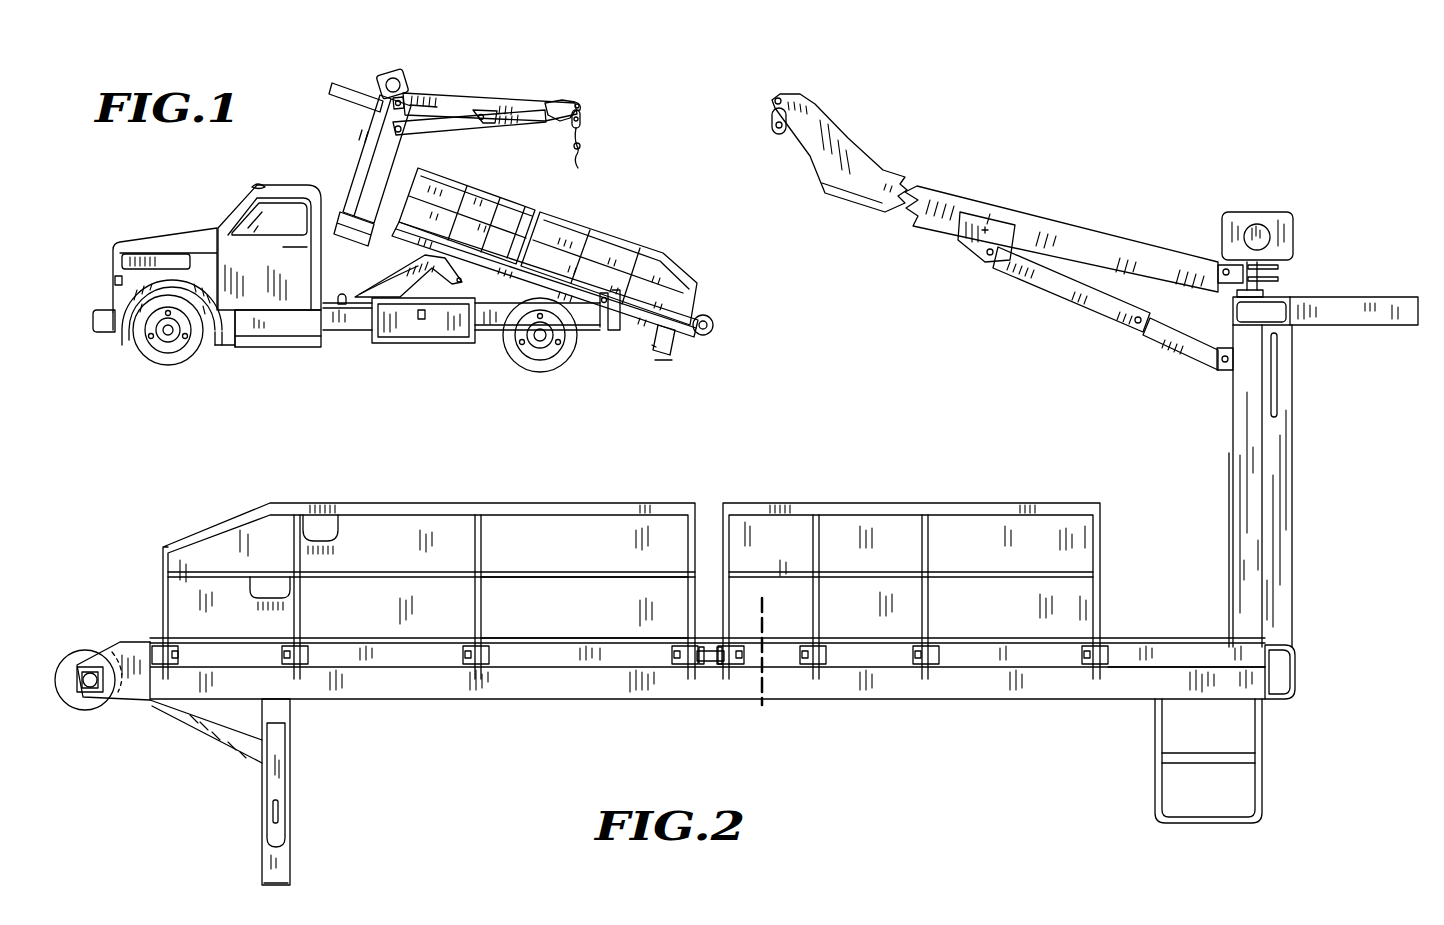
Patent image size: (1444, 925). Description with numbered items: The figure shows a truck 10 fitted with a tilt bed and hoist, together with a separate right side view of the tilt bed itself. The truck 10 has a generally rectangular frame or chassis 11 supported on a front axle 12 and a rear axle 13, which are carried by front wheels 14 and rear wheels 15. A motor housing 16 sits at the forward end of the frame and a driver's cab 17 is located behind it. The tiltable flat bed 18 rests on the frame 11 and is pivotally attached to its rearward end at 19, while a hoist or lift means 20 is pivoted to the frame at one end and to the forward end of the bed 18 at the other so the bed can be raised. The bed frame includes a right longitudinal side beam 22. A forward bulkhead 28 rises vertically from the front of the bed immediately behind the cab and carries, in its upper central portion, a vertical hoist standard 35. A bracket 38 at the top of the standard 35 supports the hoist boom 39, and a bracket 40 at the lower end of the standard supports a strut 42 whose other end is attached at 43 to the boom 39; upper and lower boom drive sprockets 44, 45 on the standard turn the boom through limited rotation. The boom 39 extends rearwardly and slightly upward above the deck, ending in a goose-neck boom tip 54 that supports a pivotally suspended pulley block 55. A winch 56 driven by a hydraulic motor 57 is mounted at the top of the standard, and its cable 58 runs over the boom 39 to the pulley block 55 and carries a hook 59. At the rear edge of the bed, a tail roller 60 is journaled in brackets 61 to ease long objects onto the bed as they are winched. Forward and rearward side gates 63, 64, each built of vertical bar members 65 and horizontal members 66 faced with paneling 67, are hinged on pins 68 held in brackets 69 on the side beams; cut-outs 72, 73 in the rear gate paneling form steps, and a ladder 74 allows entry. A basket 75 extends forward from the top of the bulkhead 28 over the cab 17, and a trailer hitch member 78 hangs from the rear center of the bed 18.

In FIG. 1, the truck 10 is at (421, 229).
In FIG. 2, the truck 10 is at (762, 690).
In FIG. 1, the frame or chassis 11 is at (490, 335).
In FIG. 1, the front axle 12 is at (158, 350).
In FIG. 1, the rear axle 13 is at (550, 345).
In FIG. 1, the front wheels 14 is at (140, 342).
In FIG. 1, the rear wheels 15 is at (548, 368).
In FIG. 1, the motor housing 16 is at (134, 242).
In FIG. 1, the driver's cab 17 is at (283, 184).
In FIG. 1, the tiltable flat bed 18 is at (620, 247).
In FIG. 2, the tiltable flat bed 18 is at (556, 700).
In FIG. 1, the pivotal attachment 19 is at (612, 330).
In FIG. 1, the hoist or lift means 20 is at (400, 276).
In FIG. 2, the right longitudinal side beam 22 is at (906, 699).
In FIG. 1, the forward wall or bulkhead 28 is at (357, 152).
In FIG. 2, the forward wall or bulkhead 28 is at (1296, 497).
In FIG. 2, the vertical standard 35 is at (1265, 294).
In FIG. 2, the bracket 38 is at (1226, 285).
In FIG. 1, the hoist boom 39 is at (522, 126).
In FIG. 2, the hoist boom 39 is at (1082, 218).
In FIG. 2, the bracket 40 is at (1220, 370).
In FIG. 2, the strut 42 is at (1092, 310).
In FIG. 2, the strut attachment 43 is at (985, 264).
In FIG. 2, the upper boom drive sprocket 44 is at (1280, 267).
In FIG. 2, the lower boom drive sprocket 45 is at (1280, 279).
In FIG. 1, the goose-neck type boom tip or extension 54 is at (563, 100).
In FIG. 2, the goose-neck type boom tip or extension 54 is at (843, 130).
In FIG. 1, the pulley block 55 is at (584, 118).
In FIG. 2, the pulley block 55 is at (770, 118).
In FIG. 1, the winch 56 is at (384, 76).
In FIG. 2, the winch 56 is at (1222, 232).
In FIG. 2, the hydraulic motor 57 is at (1260, 225).
In FIG. 1, the wire rope or cable 58 is at (470, 96).
In FIG. 1, the hook 59 is at (578, 165).
In FIG. 1, the tail roller 60 is at (715, 327).
In FIG. 2, the tail roller 60 is at (83, 650).
In FIG. 2, the brackets 61 is at (112, 642).
In FIG. 2, the forward side wall or gate 63 is at (905, 503).
In FIG. 2, the rearward side wall or gate 64 is at (429, 570).
In FIG. 2, the vertical bar members 65 is at (482, 545).
In FIG. 2, the horizontal members 66 is at (440, 578).
In FIG. 2, the paneling 67 is at (603, 617).
In FIG. 2, the pins or rods 68 is at (700, 668).
In FIG. 2, the brackets 69 is at (721, 668).
In FIG. 2, the cut-out 72 is at (340, 535).
In FIG. 2, the cut-out 73 is at (252, 592).
In FIG. 2, the ladder 74 is at (1158, 748).
In FIG. 1, the elevated platform or basket 75 is at (343, 98).
In FIG. 2, the elevated platform or basket 75 is at (1373, 327).
In FIG. 1, the trailer hitch member 78 is at (662, 352).
In FIG. 2, the trailer hitch member 78 is at (290, 792).